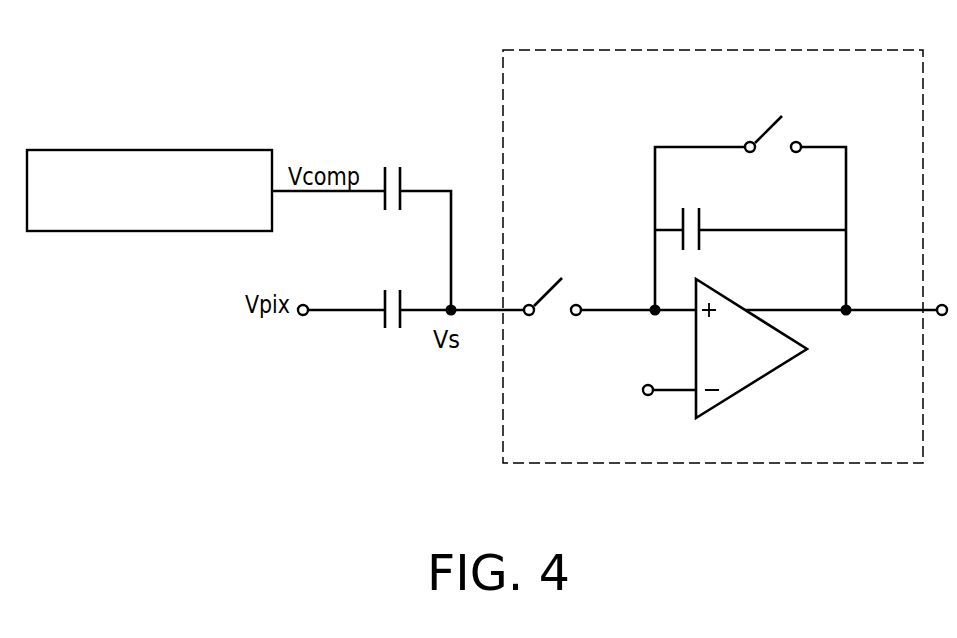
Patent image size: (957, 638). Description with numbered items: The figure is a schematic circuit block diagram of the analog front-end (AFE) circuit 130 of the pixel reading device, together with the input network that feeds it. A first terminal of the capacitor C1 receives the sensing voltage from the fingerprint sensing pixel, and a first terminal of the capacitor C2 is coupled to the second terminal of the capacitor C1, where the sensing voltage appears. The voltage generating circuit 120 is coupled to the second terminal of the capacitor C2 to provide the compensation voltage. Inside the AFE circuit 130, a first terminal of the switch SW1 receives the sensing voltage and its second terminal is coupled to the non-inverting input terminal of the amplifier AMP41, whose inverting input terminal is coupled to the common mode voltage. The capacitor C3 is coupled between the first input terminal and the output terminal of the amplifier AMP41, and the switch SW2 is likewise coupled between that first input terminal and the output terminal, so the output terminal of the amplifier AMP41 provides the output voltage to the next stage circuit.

The voltage generating circuit 120 is at (189, 150).
The analog front-end (AFE) circuit 130 is at (725, 231).
The capacitor C1 is at (394, 292).
The capacitor C2 is at (395, 173).
The capacitor C3 is at (691, 213).
The switch SW1 is at (568, 293).
The switch SW2 is at (791, 131).
The amplifier AMP41 is at (750, 388).